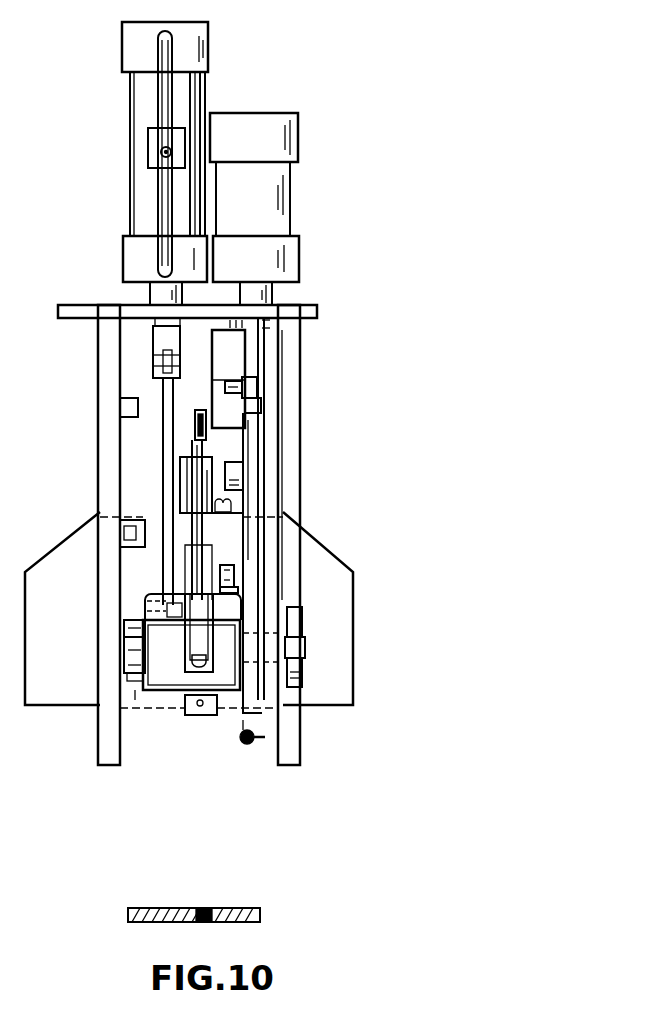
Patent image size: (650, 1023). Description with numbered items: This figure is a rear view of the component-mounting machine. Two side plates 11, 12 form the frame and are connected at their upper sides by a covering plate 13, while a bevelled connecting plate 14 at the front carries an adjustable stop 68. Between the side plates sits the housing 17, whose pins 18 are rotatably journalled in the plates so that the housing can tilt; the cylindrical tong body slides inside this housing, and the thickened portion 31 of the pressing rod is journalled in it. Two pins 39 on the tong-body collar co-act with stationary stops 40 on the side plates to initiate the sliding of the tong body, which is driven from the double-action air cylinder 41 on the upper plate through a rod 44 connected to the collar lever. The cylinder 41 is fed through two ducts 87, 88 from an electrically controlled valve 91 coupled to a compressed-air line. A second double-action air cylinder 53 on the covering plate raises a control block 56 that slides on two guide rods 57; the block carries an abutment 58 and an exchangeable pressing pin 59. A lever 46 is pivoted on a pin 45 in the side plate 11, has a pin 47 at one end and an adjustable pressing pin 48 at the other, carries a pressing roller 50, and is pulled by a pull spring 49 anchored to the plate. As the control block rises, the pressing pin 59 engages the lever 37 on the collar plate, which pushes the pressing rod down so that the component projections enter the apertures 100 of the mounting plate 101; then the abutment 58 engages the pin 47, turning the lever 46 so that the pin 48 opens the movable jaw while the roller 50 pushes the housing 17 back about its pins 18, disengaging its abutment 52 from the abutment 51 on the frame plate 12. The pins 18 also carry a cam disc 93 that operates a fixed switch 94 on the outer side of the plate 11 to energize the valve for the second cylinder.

The duct 87 is at (158, 86).
The duct 88 is at (160, 192).
The electrically controlled valve 91 is at (150, 145).
The double-action air cylinder 41 is at (190, 84).
The second double-action air cylinder 53 is at (268, 192).
The guide rods 57 is at (234, 318).
The covering plate 13 is at (72, 310).
The side plate 12 is at (106, 355).
The side plate 11 is at (268, 370).
The control block 56 is at (290, 347).
The rod 44 is at (166, 447).
The lever 37 is at (197, 487).
The exchangeable pressing pin 59 is at (200, 414).
The abutment 58 is at (215, 394).
The pin 47 is at (232, 381).
The stops 40 is at (122, 403).
The lever 46 is at (252, 494).
The pressing roller 50 is at (237, 467).
The pin 45 is at (236, 571).
The adjustable stop 68 is at (238, 590).
The abutment 52 is at (126, 626).
The pins 18 is at (126, 643).
The housing 17 is at (168, 690).
The thickened portion 31 is at (205, 672).
The adjustable pressing pin 48 is at (200, 715).
The pins 39 is at (133, 690).
The pull spring 49 is at (248, 744).
The cam disc 93 is at (296, 615).
The switch 94 is at (298, 645).
The bevelled connecting plate 14 is at (66, 546).
The abutment 51 is at (128, 534).
The mounting plate 101 is at (163, 908).
The apertures 100 is at (208, 908).